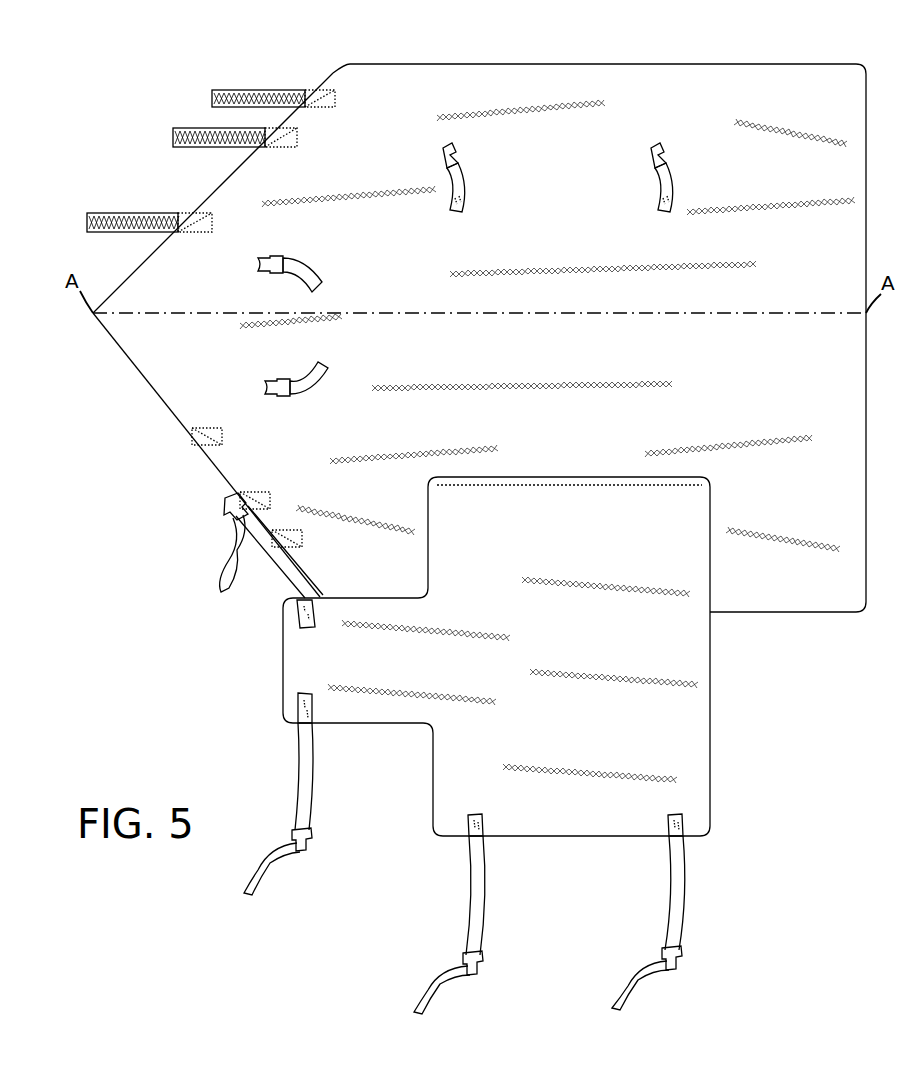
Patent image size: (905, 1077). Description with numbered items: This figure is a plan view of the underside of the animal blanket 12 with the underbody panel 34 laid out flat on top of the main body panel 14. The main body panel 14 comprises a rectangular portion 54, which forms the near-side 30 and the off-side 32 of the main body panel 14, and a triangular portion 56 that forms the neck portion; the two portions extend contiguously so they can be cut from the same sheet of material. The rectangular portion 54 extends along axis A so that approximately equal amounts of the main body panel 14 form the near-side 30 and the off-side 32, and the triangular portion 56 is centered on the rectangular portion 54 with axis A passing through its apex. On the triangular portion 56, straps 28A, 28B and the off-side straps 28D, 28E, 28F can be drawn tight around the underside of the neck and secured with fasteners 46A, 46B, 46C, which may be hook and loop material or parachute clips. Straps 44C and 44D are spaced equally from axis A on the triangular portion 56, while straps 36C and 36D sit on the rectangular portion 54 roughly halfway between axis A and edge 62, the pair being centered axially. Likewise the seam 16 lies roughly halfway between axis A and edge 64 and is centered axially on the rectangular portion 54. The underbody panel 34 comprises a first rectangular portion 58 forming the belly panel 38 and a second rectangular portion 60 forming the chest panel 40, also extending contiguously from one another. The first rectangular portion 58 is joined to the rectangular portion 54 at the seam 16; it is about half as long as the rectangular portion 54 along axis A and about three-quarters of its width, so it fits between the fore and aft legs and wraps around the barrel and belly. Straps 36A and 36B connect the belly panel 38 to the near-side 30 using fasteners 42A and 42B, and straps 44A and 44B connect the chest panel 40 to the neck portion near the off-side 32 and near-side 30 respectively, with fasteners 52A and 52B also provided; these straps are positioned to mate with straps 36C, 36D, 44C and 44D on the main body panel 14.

The animal blanket 12 is at (150, 100).
The main body panel 14 is at (399, 57).
The seam 16 is at (530, 483).
The strap 28A is at (170, 212).
The strap 28B is at (252, 145).
The strap 28D is at (209, 437).
The strap 28E is at (258, 498).
The strap 28F is at (296, 544).
The near-side 30 is at (635, 83).
The off-side 32 is at (790, 603).
The underbody panel 34 is at (714, 797).
The strap 36A is at (479, 884).
The strap 36B is at (677, 888).
The strap 36C is at (456, 177).
The strap 36D is at (662, 177).
The belly panel 38 is at (603, 644).
The chest panel 40 is at (333, 672).
The fastener 42A is at (469, 964).
The fastener 42B is at (666, 960).
The strap 44A is at (273, 572).
The strap 44B is at (299, 800).
The strap 44C is at (298, 397).
The strap 44D is at (289, 262).
The fastener 46A is at (92, 223).
The fastener 46B is at (172, 137).
The fastener 46C is at (214, 97).
The fastener 52A is at (229, 511).
The fastener 52B is at (313, 843).
The rectangular portion 54 is at (788, 78).
The triangular portion 56 is at (158, 257).
The first rectangular portion 58 is at (724, 738).
The second rectangular portion 60 is at (368, 735).
The edge 62 is at (565, 62).
The edge 64 is at (815, 612).